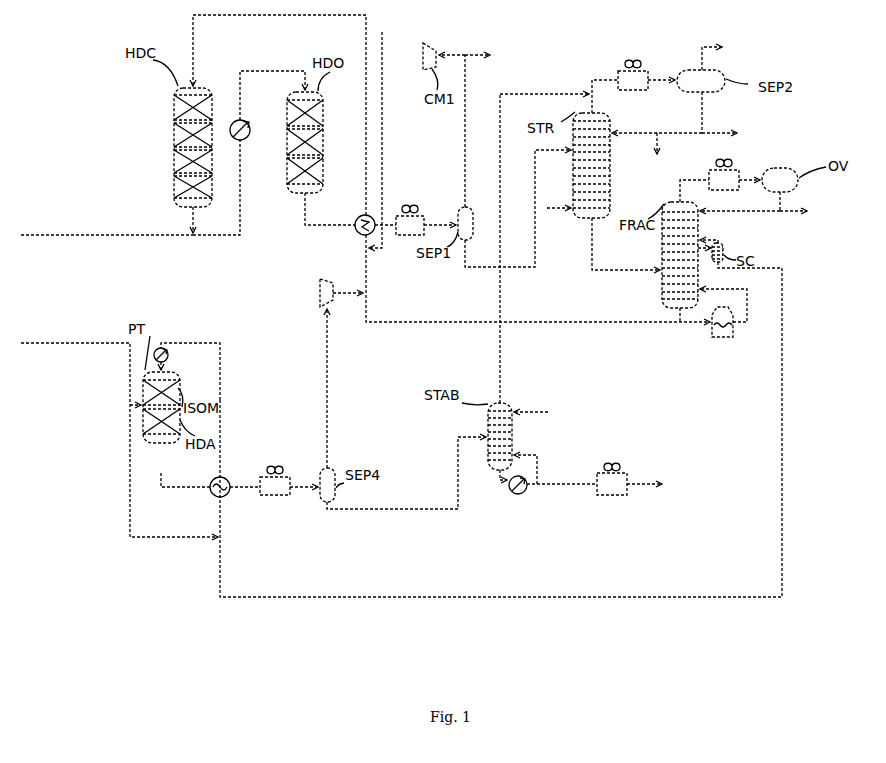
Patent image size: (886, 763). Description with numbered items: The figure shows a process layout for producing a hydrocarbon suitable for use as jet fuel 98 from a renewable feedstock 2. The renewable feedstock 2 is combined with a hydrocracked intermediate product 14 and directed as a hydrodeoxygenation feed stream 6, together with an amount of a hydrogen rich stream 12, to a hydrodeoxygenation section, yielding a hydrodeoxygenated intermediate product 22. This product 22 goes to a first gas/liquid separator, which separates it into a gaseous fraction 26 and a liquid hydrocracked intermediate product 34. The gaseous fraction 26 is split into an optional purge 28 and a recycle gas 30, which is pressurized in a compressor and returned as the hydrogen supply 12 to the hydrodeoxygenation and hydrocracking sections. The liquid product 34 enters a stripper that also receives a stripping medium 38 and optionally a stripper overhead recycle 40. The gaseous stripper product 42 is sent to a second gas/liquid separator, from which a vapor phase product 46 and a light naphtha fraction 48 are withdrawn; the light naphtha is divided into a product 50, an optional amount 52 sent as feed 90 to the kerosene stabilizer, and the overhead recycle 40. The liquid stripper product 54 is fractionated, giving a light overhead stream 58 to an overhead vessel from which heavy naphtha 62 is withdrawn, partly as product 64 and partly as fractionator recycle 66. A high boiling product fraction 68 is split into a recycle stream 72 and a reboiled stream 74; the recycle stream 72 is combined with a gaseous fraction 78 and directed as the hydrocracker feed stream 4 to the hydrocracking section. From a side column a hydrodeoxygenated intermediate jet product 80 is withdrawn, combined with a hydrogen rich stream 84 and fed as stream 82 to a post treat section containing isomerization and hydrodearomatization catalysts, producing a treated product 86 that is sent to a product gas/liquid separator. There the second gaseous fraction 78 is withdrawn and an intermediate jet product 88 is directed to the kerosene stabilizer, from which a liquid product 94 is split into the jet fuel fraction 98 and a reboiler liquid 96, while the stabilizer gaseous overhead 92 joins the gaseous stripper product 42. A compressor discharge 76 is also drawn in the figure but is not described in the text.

The renewable feedstock 2 is at (75, 236).
The hydrocracker feed stream 4 is at (192, 38).
The hydrodeoxygenation feed stream 6 is at (218, 235).
The hydrogen rich stream 12 is at (405, 33).
The hydrocracked intermediate product 14 is at (193, 226).
The hydrodeoxygenated intermediate product 22 is at (320, 228).
The gaseous fraction 26 is at (465, 130).
The purge 28 is at (480, 55).
The recycle gas 30 is at (464, 55).
The liquid hydrocracked intermediate product 34 is at (465, 266).
The stripping medium 38 is at (555, 210).
The stripper overhead recycle 40 is at (645, 132).
The gaseous stripper product 42 is at (556, 102).
The vapor phase product 46 is at (712, 46).
The light naphtha fraction 48 is at (703, 108).
The light naphtha product 50 is at (719, 142).
The light naphtha amount directed to stabilizer 52 is at (658, 145).
The liquid stripper product 54 is at (592, 240).
The light overhead stream 58 is at (678, 186).
The heavy naphtha 62 is at (784, 202).
The heavy naphtha product 64 is at (802, 212).
The fractionator recycle 66 is at (752, 212).
The high boiling product fraction 68 is at (679, 314).
The recycle stream 72 is at (600, 323).
The reboiled stream 74 is at (748, 298).
The compressor discharge line 76 is at (366, 277).
The gaseous fraction 78 is at (328, 432).
The hydrodeoxygenated intermediate jet product 80 is at (783, 410).
The feed to post treat section 82 is at (190, 343).
The hydrogen rich stream 84 is at (75, 343).
The treated product 86 is at (200, 488).
The intermediate jet product 88 is at (396, 510).
The feed to kerosene stabilizer 90 is at (531, 402).
The gaseous overhead from kerosene stabilizer 92 is at (499, 352).
The liquid product 94 is at (500, 478).
The reboiler liquid 96 is at (537, 455).
The hydrocarbon fraction suitable for use as jet fuel 98 is at (578, 485).